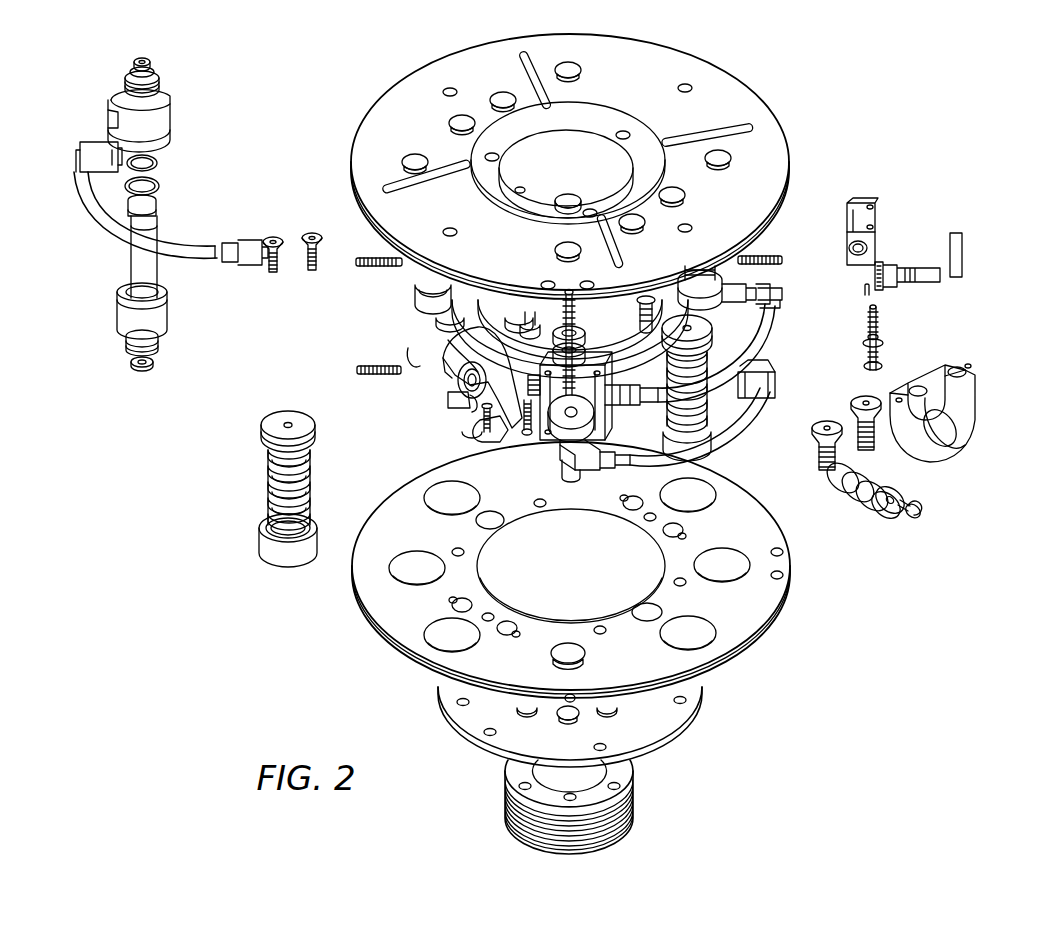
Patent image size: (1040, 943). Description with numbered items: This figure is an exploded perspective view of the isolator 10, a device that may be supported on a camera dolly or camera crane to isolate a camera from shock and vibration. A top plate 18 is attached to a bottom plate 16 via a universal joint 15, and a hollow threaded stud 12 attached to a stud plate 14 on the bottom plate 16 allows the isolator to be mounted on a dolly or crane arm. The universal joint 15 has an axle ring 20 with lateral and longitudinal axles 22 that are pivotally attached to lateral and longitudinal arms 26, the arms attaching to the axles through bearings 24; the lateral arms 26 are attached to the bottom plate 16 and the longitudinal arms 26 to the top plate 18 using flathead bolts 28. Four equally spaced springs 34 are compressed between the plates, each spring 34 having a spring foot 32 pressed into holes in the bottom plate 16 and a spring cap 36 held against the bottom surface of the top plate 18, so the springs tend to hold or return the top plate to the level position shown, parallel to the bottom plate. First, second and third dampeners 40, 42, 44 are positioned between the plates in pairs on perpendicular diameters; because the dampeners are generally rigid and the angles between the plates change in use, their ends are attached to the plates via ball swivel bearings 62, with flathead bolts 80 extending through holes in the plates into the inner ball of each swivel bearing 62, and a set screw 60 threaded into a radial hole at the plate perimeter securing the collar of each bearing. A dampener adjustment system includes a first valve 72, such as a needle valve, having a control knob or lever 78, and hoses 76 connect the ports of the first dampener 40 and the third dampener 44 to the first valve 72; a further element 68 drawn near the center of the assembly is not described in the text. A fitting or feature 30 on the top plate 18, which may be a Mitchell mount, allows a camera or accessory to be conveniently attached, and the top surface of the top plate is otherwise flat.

The isolator 10 is at (378, 82).
The hollow threaded stud 12 is at (620, 796).
The stud plate 14 is at (678, 714).
The universal joint 15 is at (430, 336).
The bottom plate 16 is at (760, 613).
The top plate 18 is at (570, 166).
The axle ring 20 is at (463, 337).
The lateral and longitudinal axles 22 is at (470, 395).
The bearings 24 is at (457, 412).
The lateral and longitudinal arms 26 is at (955, 400).
The flathead bolts 28 is at (873, 398).
The fitting or feature 30 is at (565, 98).
The spring foot 32 is at (268, 541).
The springs 34 is at (268, 486).
The spring cap 36 is at (266, 441).
The first dampener 40 is at (697, 290).
The second dampener 42 is at (171, 229).
The third dampener 44 is at (645, 298).
The set screw 60 is at (380, 268).
The ball swivel bearings 62 is at (158, 84).
The threaded rod 68 is at (540, 300).
The first valve 72 is at (553, 447).
The hoses 76 is at (748, 404).
The control knob or lever 78 is at (568, 458).
The flathead bolts 80 is at (137, 58).